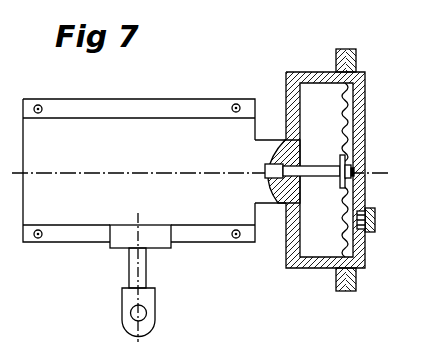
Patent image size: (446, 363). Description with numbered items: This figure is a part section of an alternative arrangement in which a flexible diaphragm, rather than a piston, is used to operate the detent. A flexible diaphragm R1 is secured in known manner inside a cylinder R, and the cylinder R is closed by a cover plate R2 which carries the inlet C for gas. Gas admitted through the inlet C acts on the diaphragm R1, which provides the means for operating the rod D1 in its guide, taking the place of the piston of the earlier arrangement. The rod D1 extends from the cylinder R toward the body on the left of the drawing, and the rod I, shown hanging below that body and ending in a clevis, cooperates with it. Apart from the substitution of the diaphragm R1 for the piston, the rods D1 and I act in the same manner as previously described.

The cylinder R is at (300, 72).
The flexible diaphragm R1 is at (365, 121).
The cover plate R2 is at (365, 90).
The inlet for gas C is at (375, 216).
The rod D1 is at (278, 200).
The rod I is at (130, 268).